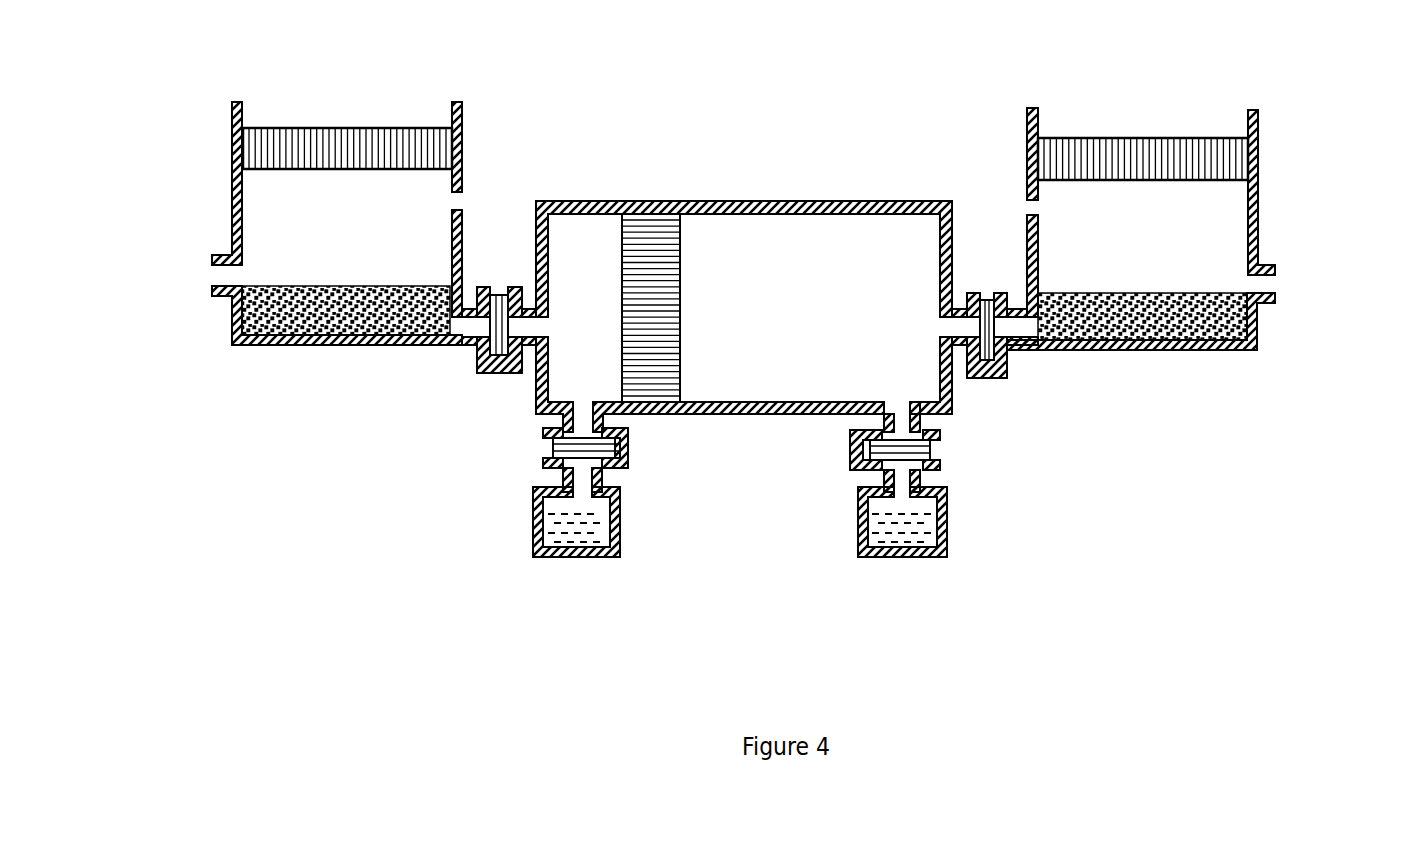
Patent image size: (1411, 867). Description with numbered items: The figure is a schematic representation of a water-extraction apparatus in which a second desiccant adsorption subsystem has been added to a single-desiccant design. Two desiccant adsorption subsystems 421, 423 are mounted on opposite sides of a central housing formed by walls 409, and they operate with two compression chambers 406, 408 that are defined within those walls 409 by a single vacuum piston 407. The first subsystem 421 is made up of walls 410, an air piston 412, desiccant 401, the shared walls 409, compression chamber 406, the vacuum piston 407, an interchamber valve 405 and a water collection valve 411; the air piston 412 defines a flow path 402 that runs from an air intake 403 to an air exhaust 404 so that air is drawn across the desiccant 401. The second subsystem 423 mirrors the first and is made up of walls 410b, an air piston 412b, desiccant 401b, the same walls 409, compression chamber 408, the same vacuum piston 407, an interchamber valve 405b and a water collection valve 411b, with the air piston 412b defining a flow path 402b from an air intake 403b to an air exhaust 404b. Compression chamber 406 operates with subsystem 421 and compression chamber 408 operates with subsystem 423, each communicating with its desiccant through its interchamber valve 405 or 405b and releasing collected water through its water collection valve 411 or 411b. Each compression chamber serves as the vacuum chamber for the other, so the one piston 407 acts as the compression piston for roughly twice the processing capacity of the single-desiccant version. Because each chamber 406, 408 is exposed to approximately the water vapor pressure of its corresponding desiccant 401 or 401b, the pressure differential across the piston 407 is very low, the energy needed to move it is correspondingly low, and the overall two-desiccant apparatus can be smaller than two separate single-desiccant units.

The desiccant 401 is at (296, 222).
The flow path 402 is at (279, 316).
The air intake 403 is at (151, 253).
The air exhaust 404 is at (516, 209).
The interchamber valve 405 is at (467, 361).
The compression chamber 406 is at (644, 186).
The vacuum piston 407 is at (710, 267).
The compression chamber 408 is at (759, 474).
The walls 409 is at (744, 281).
The walls 410 is at (190, 183).
The water collection valve 411 is at (628, 492).
The air piston 412 is at (335, 110).
The desiccant adsorption subsystem 421 is at (288, 474).
The desiccant adsorption subsystem 423 is at (1211, 478).
The desiccant 401b is at (1220, 226).
The flow path 402b is at (1193, 343).
The air intake 403b is at (1342, 257).
The air exhaust 404b is at (950, 199).
The interchamber valve 405b is at (1030, 352).
The walls 410b is at (1315, 192).
The water collection valve 411b is at (948, 493).
The air piston 412b is at (1153, 120).